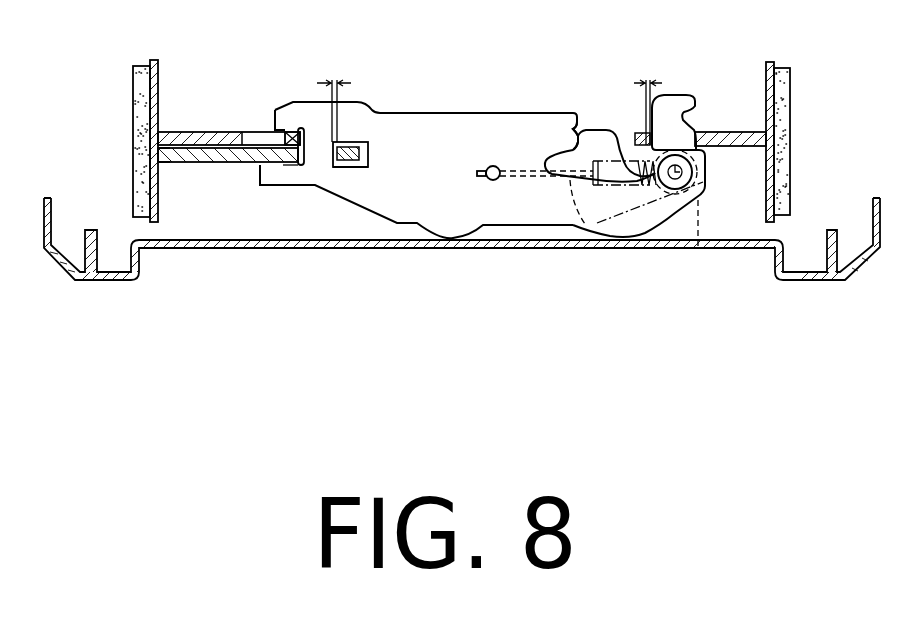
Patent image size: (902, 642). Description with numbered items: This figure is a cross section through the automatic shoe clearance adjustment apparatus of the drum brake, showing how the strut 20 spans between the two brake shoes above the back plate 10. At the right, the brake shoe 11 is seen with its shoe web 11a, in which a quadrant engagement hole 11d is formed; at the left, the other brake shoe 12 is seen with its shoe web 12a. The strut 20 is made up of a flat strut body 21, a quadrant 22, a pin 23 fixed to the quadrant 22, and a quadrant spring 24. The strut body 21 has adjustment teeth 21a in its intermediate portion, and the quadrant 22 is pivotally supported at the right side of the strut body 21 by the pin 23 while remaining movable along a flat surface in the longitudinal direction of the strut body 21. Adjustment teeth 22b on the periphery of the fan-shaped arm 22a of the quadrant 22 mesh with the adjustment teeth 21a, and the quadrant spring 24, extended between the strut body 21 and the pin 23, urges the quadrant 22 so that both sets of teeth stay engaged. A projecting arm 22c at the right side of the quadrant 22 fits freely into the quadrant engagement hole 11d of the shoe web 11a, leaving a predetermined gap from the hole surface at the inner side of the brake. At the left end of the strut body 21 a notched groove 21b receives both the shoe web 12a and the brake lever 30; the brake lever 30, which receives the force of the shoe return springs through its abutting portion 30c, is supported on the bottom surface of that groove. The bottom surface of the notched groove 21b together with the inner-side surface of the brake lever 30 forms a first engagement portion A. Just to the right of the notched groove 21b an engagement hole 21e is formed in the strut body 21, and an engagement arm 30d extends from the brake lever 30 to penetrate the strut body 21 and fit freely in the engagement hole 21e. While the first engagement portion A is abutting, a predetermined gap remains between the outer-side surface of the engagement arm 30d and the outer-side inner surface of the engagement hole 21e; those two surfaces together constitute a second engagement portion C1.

The back plate 10 is at (478, 257).
The brake shoe 11 is at (799, 111).
The shoe web 11a is at (727, 132).
The quadrant engagement hole 11d is at (657, 93).
The brake shoe 12 is at (126, 110).
The shoe web 12a is at (200, 132).
The strut 20 is at (450, 106).
The strut body 21 is at (403, 118).
The adjustment teeth 21a is at (567, 175).
The notched groove 21b is at (288, 130).
The engagement hole 21e is at (365, 167).
The quadrant 22 is at (655, 235).
The fan-shaped arm 22a is at (608, 132).
The adjustment teeth 22b is at (575, 147).
The projecting arm 22c is at (697, 110).
The pin 23 is at (690, 186).
The quadrant spring 24 is at (578, 190).
The brake lever 30 is at (212, 162).
The abutting portion 30c is at (163, 155).
The engagement arm 30d is at (348, 158).
The first engagement portion A is at (305, 178).
The second engagement portion C1 is at (337, 176).